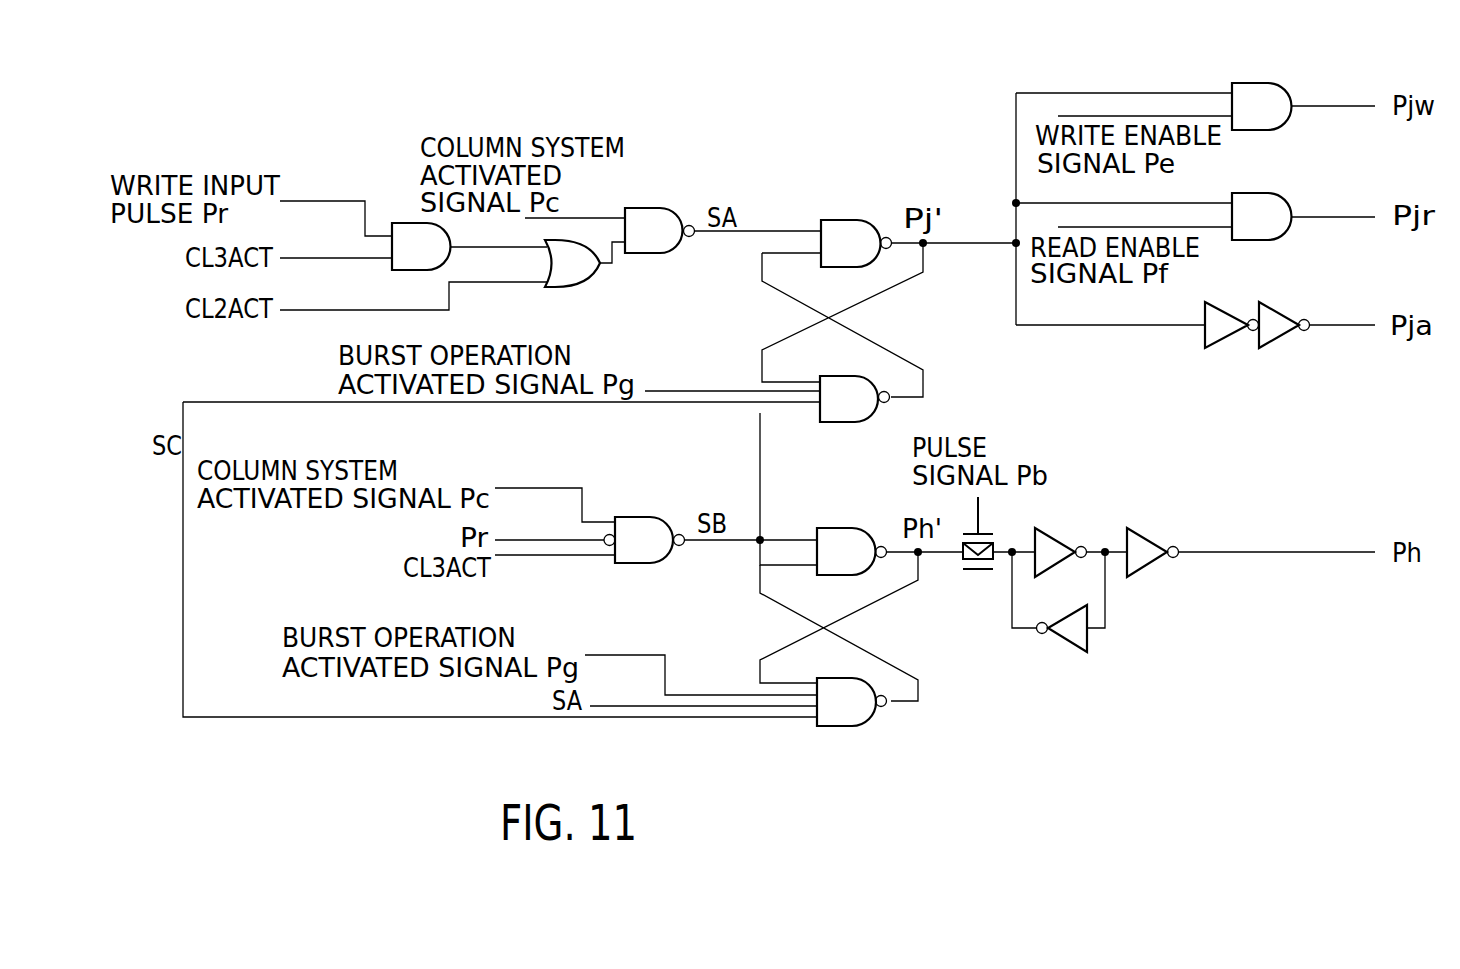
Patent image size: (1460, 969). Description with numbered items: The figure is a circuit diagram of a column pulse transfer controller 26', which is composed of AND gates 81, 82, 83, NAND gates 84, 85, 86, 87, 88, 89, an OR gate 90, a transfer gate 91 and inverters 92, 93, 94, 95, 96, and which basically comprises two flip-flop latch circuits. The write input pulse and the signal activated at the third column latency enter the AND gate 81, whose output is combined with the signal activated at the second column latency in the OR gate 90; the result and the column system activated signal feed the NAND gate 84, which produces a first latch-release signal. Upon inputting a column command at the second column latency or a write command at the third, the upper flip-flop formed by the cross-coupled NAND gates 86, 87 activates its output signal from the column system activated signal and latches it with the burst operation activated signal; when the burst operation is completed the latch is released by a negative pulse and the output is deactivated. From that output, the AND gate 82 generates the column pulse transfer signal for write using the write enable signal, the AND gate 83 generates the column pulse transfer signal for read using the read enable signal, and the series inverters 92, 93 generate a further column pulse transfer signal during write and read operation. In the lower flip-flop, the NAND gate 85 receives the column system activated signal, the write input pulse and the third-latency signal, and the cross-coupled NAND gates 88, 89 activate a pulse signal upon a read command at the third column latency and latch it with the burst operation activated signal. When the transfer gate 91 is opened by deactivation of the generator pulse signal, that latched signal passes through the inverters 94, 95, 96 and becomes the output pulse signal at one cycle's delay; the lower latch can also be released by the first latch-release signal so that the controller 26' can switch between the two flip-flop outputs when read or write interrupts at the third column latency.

The column pulse transfer controller 26' is at (746, 123).
The AND gate 81 is at (395, 222).
The AND gate 82 is at (1256, 83).
The AND gate 83 is at (1276, 198).
The NAND gate 84 is at (655, 208).
The NAND gate 85 is at (637, 517).
The NAND gate 86 is at (848, 220).
The NAND gate 87 is at (838, 376).
The NAND gate 88 is at (838, 526).
The NAND gate 89 is at (838, 728).
The OR gate 90 is at (584, 284).
The transfer gate 91 is at (978, 572).
The inverter 92 is at (1222, 310).
The inverter 93 is at (1280, 310).
The inverter 94 is at (1059, 537).
The inverter 95 is at (1058, 638).
The inverter 96 is at (1154, 541).